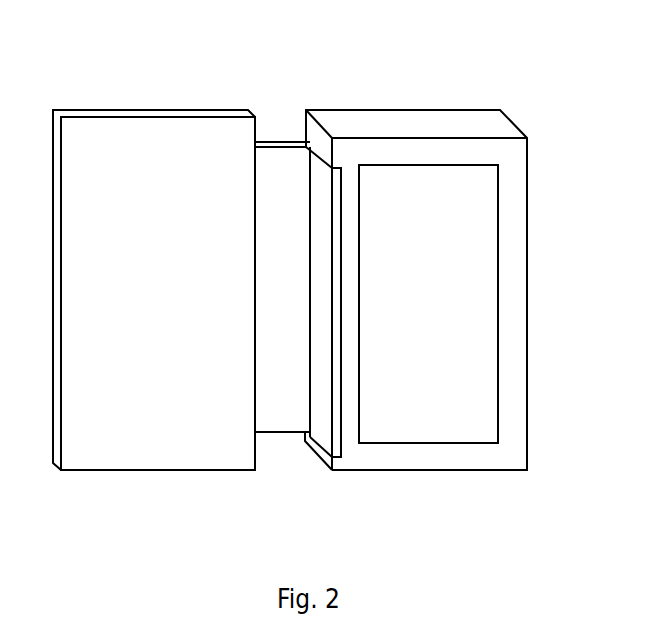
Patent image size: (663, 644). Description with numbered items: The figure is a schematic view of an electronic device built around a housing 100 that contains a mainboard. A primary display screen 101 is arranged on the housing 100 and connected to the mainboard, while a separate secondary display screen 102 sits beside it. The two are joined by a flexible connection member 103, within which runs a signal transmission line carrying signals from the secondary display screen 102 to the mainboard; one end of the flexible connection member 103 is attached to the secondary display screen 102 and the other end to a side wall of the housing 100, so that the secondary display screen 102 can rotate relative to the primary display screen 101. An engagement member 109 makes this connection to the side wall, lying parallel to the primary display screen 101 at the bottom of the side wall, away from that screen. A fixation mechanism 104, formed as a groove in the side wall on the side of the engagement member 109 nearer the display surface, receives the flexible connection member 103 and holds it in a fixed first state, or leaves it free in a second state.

The housing 100 is at (367, 130).
The primary display screen 101 is at (465, 195).
The secondary display screen 102 is at (142, 157).
The flexible connection member 103 is at (275, 138).
The fixation mechanism 104 is at (319, 415).
The engagement member 109 is at (309, 403).